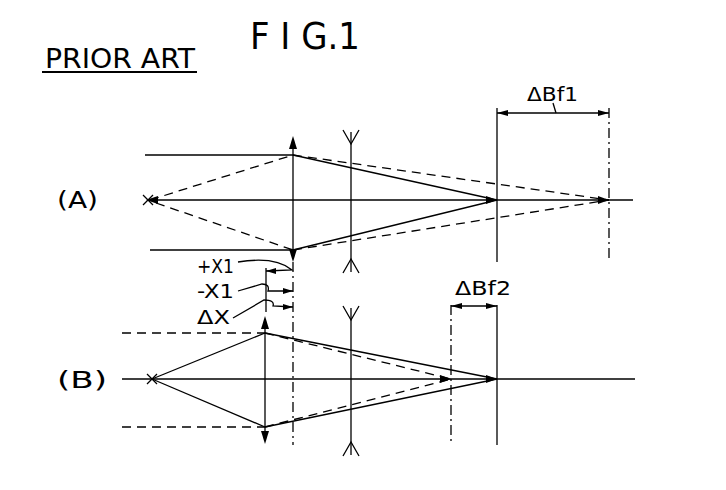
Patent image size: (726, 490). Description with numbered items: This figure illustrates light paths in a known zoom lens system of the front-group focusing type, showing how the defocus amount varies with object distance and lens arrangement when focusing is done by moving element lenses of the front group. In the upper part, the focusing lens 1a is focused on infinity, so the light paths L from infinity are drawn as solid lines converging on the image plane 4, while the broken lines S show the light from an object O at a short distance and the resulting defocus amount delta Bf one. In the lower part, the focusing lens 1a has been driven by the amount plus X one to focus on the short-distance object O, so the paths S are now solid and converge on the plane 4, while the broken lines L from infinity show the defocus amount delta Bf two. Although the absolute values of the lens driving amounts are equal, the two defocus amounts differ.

The focusing lens 1a is at (292, 138).
The image plane (film surface) 4 is at (497, 200).
The light paths for infinity L is at (200, 154).
The light paths for short-distance object S is at (187, 213).
The object O is at (149, 278).